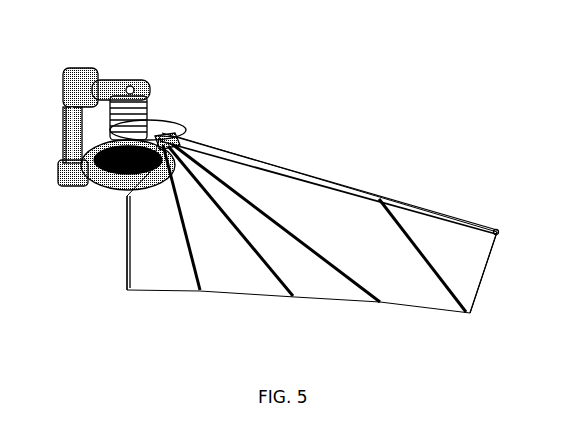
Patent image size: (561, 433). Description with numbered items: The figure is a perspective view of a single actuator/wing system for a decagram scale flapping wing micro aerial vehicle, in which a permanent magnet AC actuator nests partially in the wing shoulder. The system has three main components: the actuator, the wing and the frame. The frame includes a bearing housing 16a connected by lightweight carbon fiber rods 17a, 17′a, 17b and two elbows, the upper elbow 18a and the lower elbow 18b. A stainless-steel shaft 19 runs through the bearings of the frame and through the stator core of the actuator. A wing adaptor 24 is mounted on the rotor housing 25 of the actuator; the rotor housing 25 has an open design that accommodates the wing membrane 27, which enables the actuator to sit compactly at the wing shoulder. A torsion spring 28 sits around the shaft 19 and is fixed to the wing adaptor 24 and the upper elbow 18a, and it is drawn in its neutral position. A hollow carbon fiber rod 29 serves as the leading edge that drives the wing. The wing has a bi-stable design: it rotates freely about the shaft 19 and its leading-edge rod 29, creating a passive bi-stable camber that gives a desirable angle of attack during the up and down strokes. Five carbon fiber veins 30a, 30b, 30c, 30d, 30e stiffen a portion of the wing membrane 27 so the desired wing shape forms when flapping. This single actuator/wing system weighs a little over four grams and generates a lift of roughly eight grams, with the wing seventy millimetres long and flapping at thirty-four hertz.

The bearing housing 16a is at (133, 83).
The carbon fiber rod 17a is at (104, 82).
The carbon fiber rod 17′a is at (110, 85).
The carbon fiber rod 17b is at (63, 133).
The upper elbow 18a is at (78, 68).
The elbow 18b is at (63, 165).
The stainless-steel shaft 19 is at (125, 240).
The wing adaptor 24 is at (172, 137).
The rotor housing 25 is at (100, 190).
The wing membrane 27 is at (322, 192).
The torsion spring 28 is at (152, 122).
The hollow carbon fiber rod 29 is at (497, 229).
The carbon fiber vein 30a is at (200, 290).
The carbon fiber vein 30b is at (291, 297).
The carbon fiber vein 30c is at (375, 302).
The carbon fiber vein 30d is at (463, 313).
The carbon fiber vein 30e is at (453, 240).